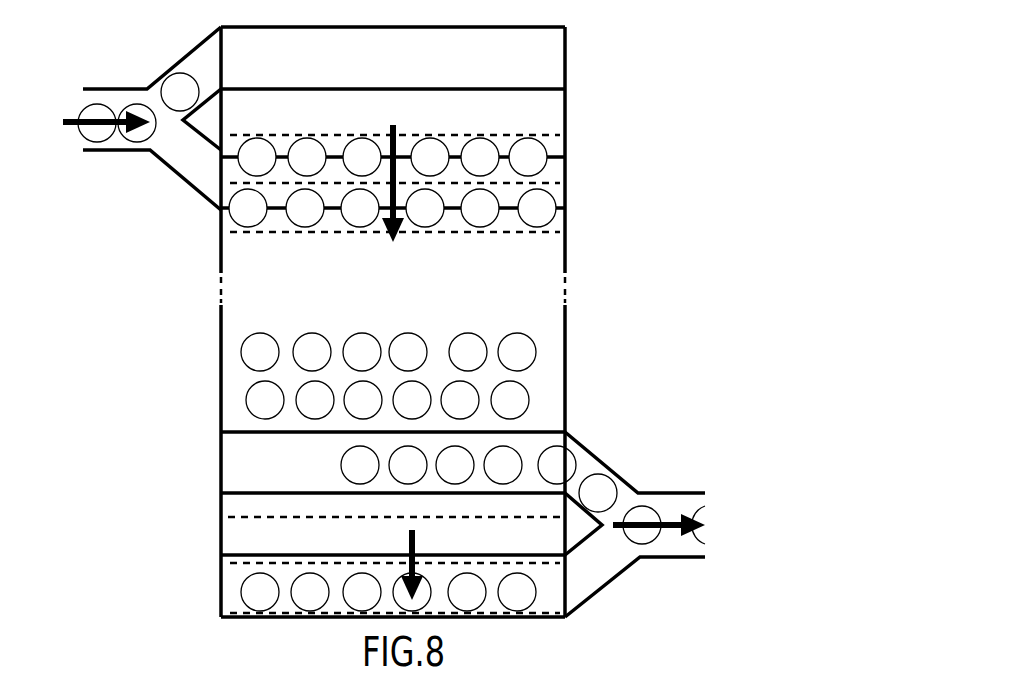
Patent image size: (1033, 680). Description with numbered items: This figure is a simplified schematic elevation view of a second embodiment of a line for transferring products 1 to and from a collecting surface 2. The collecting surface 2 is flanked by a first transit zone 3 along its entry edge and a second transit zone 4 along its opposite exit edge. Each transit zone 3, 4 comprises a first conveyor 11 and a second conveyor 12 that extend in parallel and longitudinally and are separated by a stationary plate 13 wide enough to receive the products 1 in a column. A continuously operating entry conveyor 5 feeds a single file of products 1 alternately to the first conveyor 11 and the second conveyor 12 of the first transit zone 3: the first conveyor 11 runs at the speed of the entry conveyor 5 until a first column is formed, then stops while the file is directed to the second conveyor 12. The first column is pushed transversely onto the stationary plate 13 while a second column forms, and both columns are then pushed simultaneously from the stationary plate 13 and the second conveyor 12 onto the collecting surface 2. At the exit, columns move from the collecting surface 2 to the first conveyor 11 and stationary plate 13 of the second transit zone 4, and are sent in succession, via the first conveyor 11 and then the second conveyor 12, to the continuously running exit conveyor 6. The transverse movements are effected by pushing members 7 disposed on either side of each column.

The products 1 is at (527, 346).
The collecting surface 2 is at (213, 355).
The first transit zone 3 is at (576, 125).
The second transit zone 4 is at (208, 485).
The entry conveyor 5 is at (110, 144).
The exit conveyor 6 is at (675, 501).
The members 7 is at (257, 246).
The first conveyor 11 is at (550, 65).
The second conveyor 12 is at (560, 168).
The stationary plate 13 is at (549, 113).